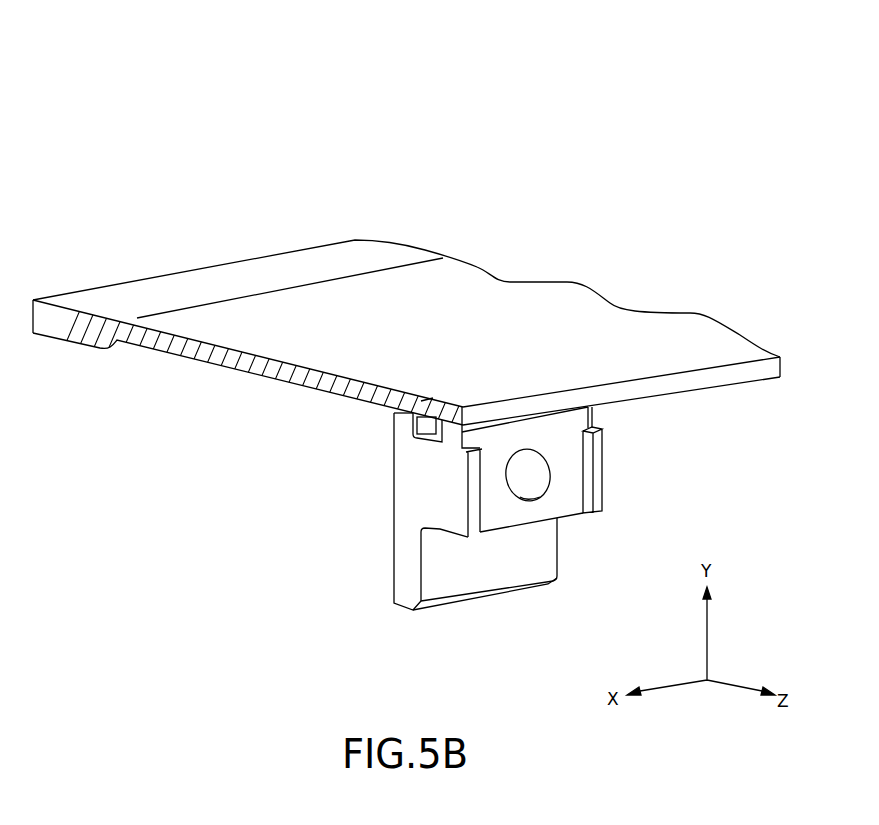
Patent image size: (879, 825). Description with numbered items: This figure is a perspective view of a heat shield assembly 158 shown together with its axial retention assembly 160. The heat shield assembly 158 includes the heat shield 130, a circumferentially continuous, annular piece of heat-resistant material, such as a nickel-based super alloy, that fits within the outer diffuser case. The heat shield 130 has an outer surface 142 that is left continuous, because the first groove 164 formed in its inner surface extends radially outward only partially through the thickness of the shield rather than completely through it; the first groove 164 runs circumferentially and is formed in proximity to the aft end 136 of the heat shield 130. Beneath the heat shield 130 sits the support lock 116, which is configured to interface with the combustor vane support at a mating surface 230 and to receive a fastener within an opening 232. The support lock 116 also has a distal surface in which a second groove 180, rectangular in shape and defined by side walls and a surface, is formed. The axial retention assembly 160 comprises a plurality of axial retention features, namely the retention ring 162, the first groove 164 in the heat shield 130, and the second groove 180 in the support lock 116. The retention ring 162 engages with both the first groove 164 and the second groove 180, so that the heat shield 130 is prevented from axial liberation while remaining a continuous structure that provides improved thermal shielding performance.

The heat shield assembly 158 is at (237, 169).
The heat shield 130 is at (593, 317).
The outer surface 142 is at (400, 321).
The aft end 136 is at (705, 373).
The first groove 164 is at (427, 398).
The axial retention assembly 160 is at (357, 435).
The retention ring 162 is at (430, 423).
The second groove 180 is at (415, 443).
The support lock 116 is at (407, 573).
The mating surface 230 is at (573, 443).
The opening 232 is at (528, 493).